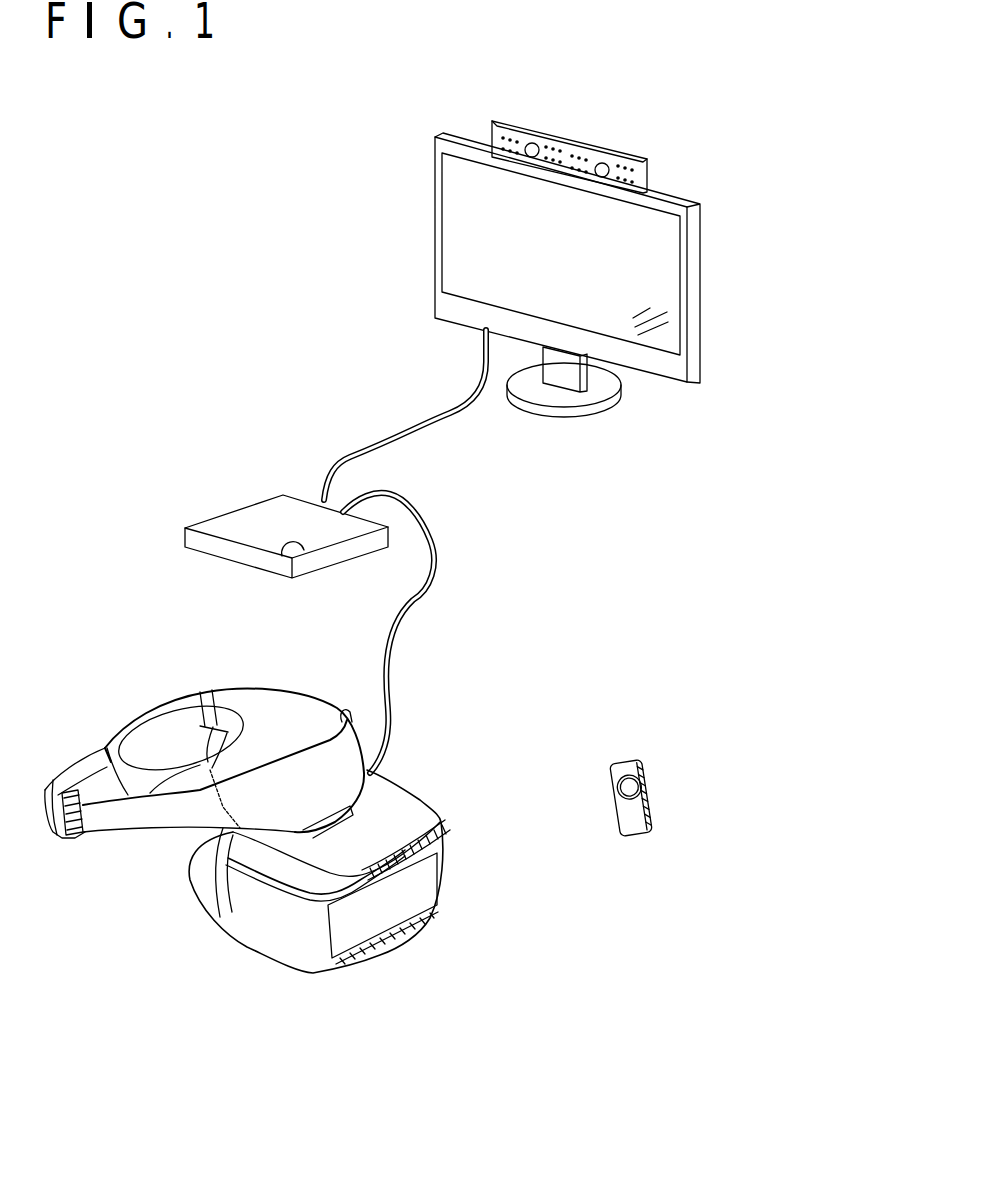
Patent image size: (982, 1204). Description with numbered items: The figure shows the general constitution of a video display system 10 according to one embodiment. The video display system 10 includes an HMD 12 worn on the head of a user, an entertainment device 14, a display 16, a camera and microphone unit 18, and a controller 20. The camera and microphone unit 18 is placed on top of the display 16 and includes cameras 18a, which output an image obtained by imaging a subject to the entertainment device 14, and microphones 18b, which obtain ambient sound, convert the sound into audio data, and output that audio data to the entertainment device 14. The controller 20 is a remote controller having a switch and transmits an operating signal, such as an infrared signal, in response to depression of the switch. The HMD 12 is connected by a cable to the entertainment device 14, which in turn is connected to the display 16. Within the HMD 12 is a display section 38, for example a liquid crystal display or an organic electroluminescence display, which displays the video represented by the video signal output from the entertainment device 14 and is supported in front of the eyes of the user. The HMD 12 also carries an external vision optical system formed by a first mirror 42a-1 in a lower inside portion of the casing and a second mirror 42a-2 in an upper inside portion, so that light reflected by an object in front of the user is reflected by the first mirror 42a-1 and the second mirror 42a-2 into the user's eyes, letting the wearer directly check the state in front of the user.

The video display system 10 is at (622, 983).
The HMD 12 is at (312, 973).
The entertainment device 14 is at (230, 512).
The display 16 is at (703, 289).
The camera and microphone unit 18 is at (648, 176).
The cameras 18a is at (602, 178).
The microphones 18b is at (562, 130).
The controller 20 is at (625, 836).
The display section 38 is at (450, 873).
The first mirror 42a-1 is at (387, 953).
The second mirror 42a-2 is at (525, 830).